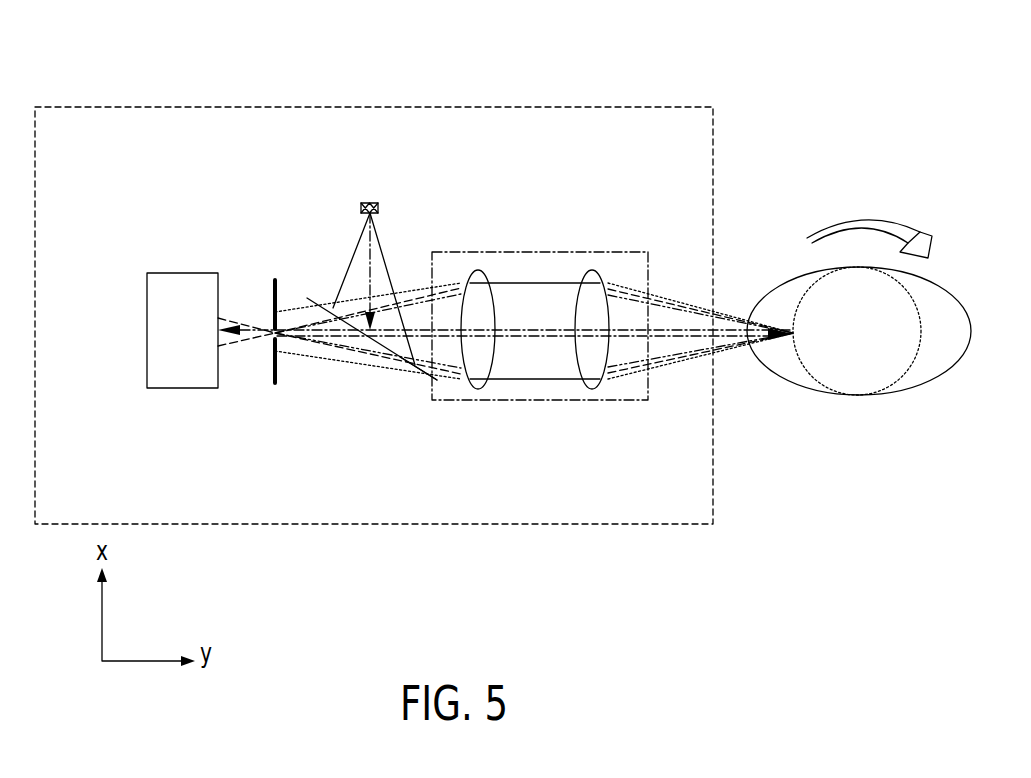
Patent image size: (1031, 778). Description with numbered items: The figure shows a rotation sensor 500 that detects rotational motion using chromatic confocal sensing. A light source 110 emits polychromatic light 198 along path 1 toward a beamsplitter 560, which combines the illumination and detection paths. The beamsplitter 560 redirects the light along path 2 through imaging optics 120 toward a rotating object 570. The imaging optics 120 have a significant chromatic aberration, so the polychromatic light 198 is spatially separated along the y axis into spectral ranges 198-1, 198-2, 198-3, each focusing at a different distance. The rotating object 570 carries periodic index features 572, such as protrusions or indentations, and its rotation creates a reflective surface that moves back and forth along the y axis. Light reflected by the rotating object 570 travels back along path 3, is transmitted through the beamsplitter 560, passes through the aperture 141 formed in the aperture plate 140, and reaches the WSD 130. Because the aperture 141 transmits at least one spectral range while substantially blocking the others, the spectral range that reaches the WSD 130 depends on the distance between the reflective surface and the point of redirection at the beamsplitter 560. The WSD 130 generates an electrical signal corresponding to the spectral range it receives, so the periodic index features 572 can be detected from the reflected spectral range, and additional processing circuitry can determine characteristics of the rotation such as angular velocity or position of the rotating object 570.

The rotation sensor 500 is at (344, 91).
The light source 110 is at (371, 203).
The polychromatic light 198 is at (376, 250).
The path 1 is at (372, 268).
The path 2 is at (513, 335).
The path 3 is at (307, 327).
The WSD 130 is at (179, 286).
The aperture plate 140 is at (279, 282).
The aperture 141 is at (264, 341).
The spectral range 198-1 is at (322, 358).
The spectral range 198-2 is at (229, 316).
The spectral range 198-3 is at (377, 360).
The beamsplitter 560 is at (424, 372).
The imaging optics 120 is at (478, 250).
The periodic index features 572 is at (781, 300).
The rotating object 570 is at (862, 386).